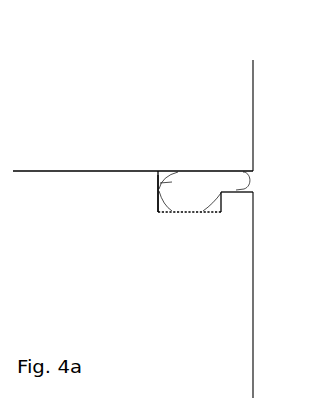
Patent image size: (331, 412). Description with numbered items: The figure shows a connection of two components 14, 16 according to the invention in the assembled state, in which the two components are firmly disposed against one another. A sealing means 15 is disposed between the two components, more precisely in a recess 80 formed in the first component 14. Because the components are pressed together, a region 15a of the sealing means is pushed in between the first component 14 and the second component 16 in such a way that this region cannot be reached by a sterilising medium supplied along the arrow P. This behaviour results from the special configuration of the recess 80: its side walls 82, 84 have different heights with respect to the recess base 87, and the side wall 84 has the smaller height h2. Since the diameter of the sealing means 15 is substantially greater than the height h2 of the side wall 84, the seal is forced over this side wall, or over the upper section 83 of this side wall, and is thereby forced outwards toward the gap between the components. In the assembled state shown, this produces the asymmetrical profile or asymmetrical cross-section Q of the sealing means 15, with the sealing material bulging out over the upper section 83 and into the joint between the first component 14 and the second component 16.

The first component 14 is at (143, 320).
The sealing means 15 is at (157, 176).
The region of the sealing means 15a is at (241, 183).
The second component 16 is at (79, 136).
The recess 80 is at (208, 211).
The side wall of the recess 82 is at (157, 177).
The upper section of the side wall 83 is at (232, 192).
The side wall of the recess 84 is at (222, 210).
The recess base 87 is at (158, 213).
The asymmetrical cross-section of the sealing means Q is at (220, 184).
The arrow indicating direction of sterilising medium P is at (302, 162).
The height of the side wall 84 h2 is at (120, 174).